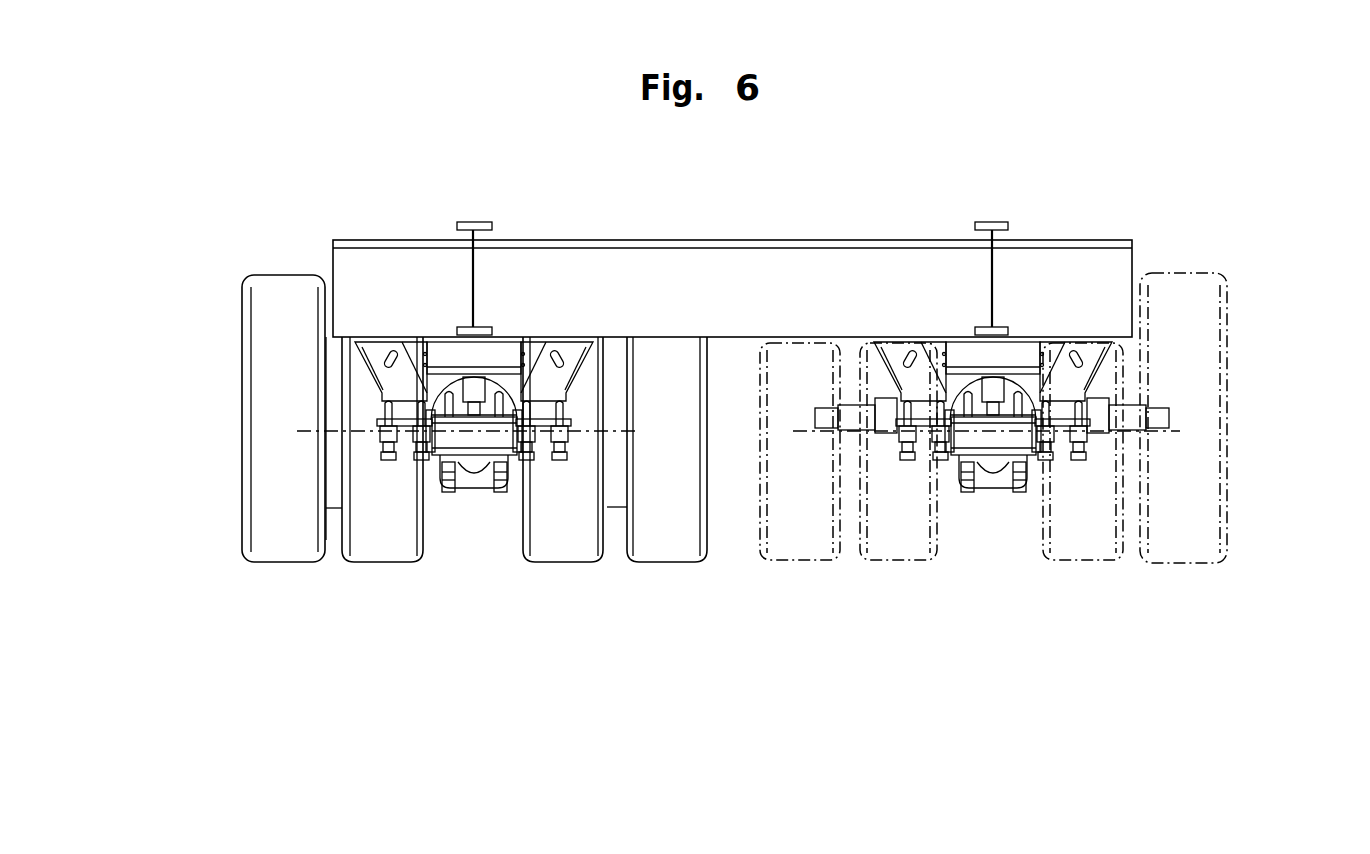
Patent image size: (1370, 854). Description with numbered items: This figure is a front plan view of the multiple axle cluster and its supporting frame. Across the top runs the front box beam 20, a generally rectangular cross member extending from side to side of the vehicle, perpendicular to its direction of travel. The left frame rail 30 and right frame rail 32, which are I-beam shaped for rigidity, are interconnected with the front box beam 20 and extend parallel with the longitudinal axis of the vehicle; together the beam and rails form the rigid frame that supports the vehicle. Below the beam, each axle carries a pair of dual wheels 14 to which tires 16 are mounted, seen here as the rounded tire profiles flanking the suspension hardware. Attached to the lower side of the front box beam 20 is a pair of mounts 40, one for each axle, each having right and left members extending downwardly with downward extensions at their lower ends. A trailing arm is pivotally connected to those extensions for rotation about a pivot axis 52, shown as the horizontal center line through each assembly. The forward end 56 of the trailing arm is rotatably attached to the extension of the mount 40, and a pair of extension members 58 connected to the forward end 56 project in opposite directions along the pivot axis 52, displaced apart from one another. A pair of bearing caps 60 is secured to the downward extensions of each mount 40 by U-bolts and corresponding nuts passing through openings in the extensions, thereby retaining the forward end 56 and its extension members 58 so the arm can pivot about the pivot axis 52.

The dual wheels 14 is at (333, 490).
The tires 16 is at (282, 475).
The front box beam 20 is at (693, 238).
The left frame rail 30 is at (993, 221).
The right frame rail 32 is at (482, 221).
The mount 40 is at (375, 347).
The pivot axis 52 is at (613, 432).
The forward end 56 is at (468, 438).
The extension members 58 is at (570, 440).
The bearing caps 60 is at (402, 442).